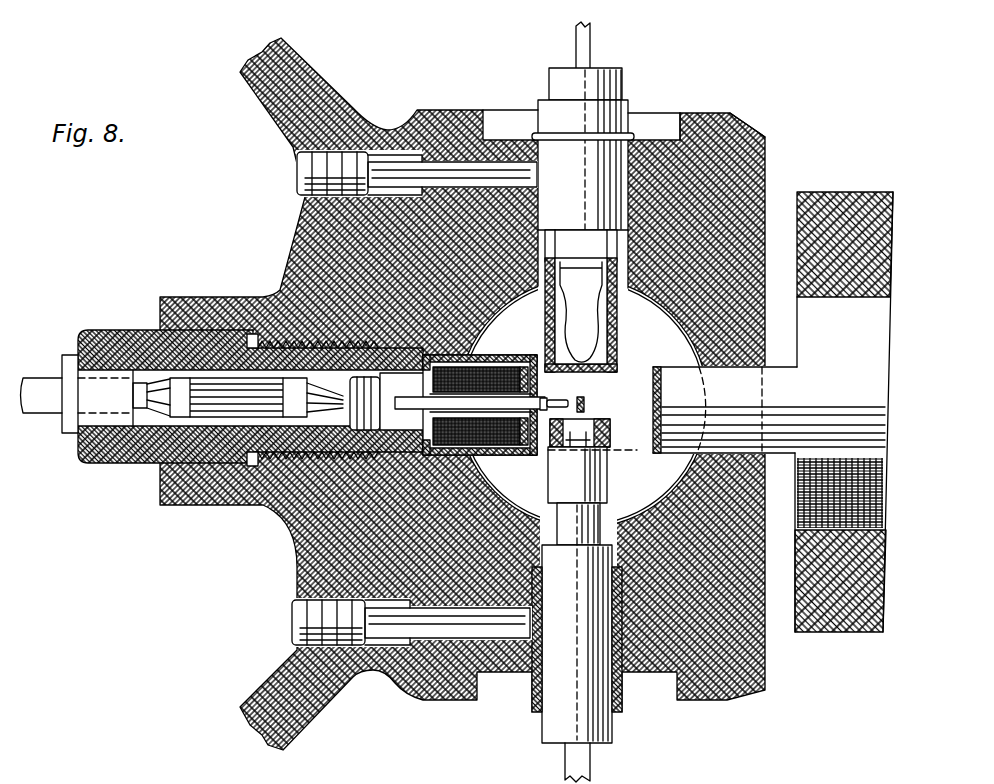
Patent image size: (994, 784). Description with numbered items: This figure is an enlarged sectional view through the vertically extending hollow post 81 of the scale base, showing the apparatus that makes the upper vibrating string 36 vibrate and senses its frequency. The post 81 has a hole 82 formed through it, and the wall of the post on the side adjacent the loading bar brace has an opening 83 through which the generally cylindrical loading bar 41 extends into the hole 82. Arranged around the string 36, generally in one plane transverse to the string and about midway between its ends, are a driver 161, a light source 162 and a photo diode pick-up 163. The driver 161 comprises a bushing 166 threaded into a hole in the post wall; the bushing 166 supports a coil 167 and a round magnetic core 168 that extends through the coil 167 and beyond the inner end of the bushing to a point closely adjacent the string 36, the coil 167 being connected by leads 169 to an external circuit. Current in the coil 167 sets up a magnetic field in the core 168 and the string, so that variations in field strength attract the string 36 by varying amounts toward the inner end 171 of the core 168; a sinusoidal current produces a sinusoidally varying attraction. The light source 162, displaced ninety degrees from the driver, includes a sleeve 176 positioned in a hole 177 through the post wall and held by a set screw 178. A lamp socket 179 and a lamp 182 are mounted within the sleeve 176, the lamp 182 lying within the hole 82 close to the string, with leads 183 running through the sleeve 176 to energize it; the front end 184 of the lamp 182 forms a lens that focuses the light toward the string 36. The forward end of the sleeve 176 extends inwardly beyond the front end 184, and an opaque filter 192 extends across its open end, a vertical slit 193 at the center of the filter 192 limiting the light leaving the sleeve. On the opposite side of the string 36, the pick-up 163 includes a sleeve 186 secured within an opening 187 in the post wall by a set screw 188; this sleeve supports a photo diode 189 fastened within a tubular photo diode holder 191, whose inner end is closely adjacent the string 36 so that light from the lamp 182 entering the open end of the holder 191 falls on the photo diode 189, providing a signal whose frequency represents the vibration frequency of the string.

The upper vibrating string 36 is at (586, 402).
The loading bar 41 is at (860, 396).
The hollow post 81 is at (275, 540).
The hole 82 is at (513, 323).
The opening 83 is at (747, 462).
The driver 161 is at (107, 322).
The light source 162 is at (640, 70).
The photo diode pick-up 163 is at (538, 727).
The bushing 166 is at (120, 458).
The coil 167 is at (468, 468).
The core 168 is at (413, 428).
The leads 169 is at (368, 460).
The inner end of the core 171 is at (560, 399).
The sleeve 176 is at (656, 262).
The hole 177 is at (653, 143).
The set screw 178 is at (393, 163).
The lamp socket 179 is at (572, 258).
The lamp 182 is at (548, 305).
The leads 183 is at (577, 38).
The front end of the lamp 184 is at (668, 303).
The sleeve 186 is at (598, 728).
The opening 187 is at (618, 611).
The set screw 188 is at (403, 625).
The photo diode 189 is at (604, 440).
The photo diode holder 191 is at (597, 494).
The opaque filter 192 is at (590, 350).
The slit 193 is at (556, 325).